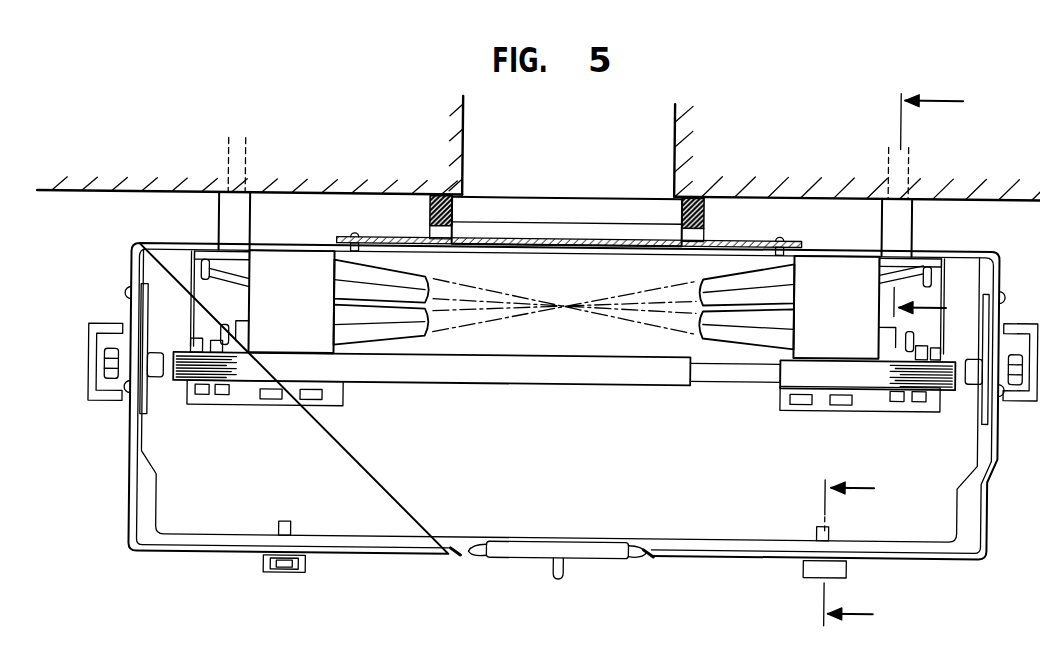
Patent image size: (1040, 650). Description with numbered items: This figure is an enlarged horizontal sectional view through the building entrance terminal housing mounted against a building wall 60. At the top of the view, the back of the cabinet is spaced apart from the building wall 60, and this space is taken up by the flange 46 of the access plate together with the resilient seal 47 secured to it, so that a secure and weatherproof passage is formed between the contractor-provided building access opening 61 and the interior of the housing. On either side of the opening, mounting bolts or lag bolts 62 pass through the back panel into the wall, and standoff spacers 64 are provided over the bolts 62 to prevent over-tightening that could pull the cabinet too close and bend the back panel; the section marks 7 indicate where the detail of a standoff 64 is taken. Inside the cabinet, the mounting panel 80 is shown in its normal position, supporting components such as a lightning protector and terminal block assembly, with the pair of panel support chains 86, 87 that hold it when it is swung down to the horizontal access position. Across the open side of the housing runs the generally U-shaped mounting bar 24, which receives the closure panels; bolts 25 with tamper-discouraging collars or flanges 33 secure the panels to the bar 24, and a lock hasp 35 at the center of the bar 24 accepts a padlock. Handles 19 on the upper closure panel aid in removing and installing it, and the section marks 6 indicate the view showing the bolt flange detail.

The handles 19 is at (480, 551).
The mounting bar 24 is at (206, 539).
The bolts 25 is at (285, 590).
The collars or flanges 33 is at (267, 568).
The lock hasp 35 is at (557, 578).
The flange 46 is at (690, 236).
The resilient seal 47 is at (703, 210).
The building wall 60 is at (309, 192).
The building access opening 61 is at (460, 165).
The mounting bolts or lag bolts 62 is at (232, 170).
The standoff spacers 64 is at (250, 224).
The mounting panel 80 is at (453, 383).
The panel support chain 86 is at (704, 280).
The panel support chain 87 is at (421, 267).
The section line 6- 6 is at (864, 557).
The section line 7- 7 is at (942, 207).